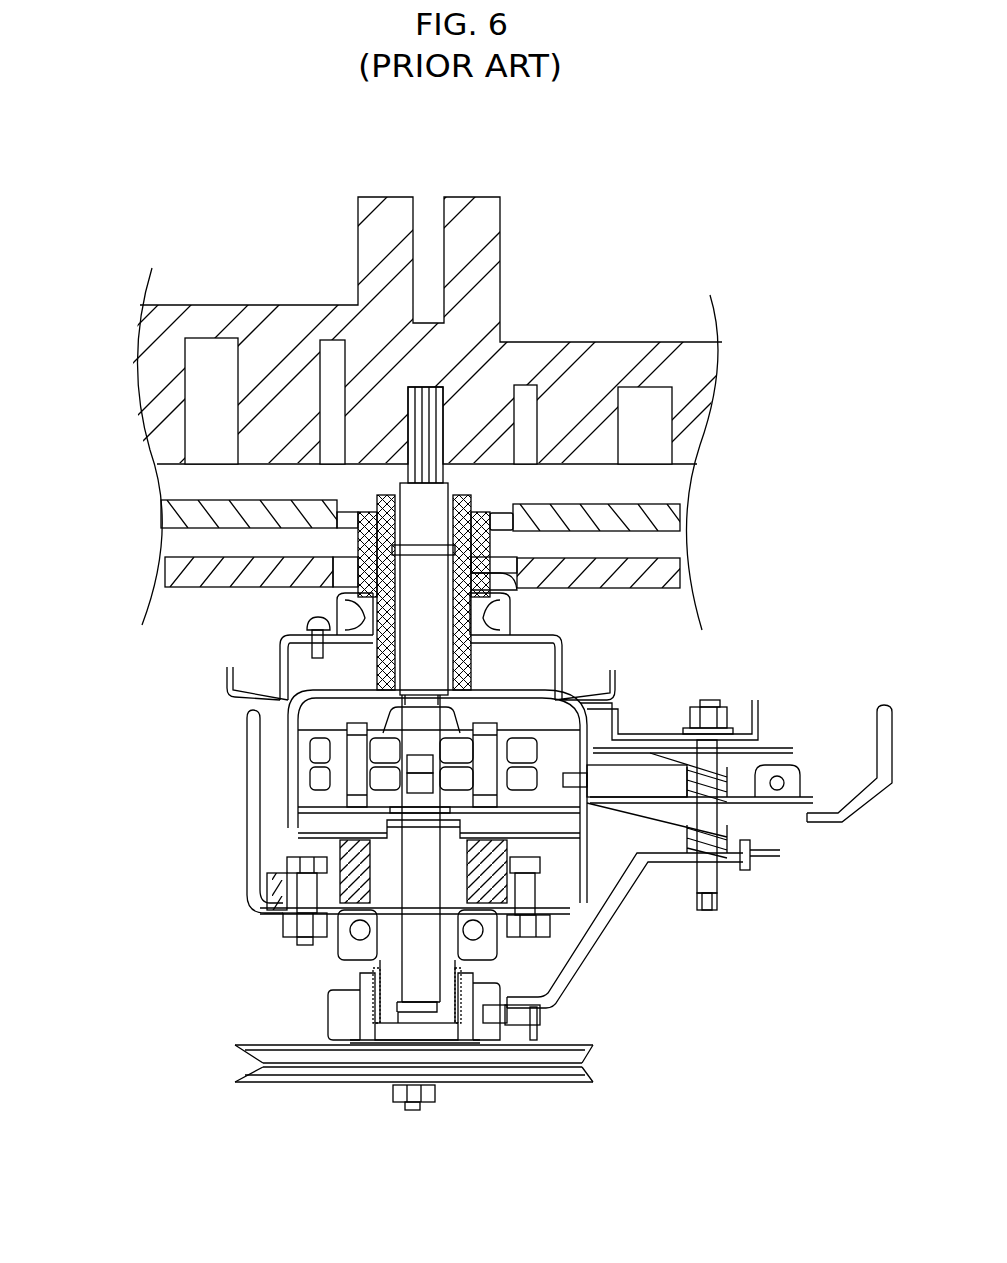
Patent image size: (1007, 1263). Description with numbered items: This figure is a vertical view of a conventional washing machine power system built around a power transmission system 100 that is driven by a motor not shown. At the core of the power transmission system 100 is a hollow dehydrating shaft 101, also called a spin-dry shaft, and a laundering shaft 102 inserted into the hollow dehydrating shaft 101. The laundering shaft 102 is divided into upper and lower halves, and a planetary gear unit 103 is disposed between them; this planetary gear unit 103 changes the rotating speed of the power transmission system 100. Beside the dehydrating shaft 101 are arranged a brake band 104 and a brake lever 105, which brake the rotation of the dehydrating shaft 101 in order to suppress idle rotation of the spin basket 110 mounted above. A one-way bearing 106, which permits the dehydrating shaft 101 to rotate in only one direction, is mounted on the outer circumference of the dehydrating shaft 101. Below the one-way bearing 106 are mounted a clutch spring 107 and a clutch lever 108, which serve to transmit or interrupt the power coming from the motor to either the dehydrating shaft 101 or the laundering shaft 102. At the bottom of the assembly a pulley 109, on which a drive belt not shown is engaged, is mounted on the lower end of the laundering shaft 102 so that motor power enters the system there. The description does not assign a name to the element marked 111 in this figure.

The power transmission system 100 is at (120, 693).
The hollow dehydrating shaft 101 is at (473, 573).
The laundering shaft 102 is at (440, 507).
The planetary gear unit 103 is at (495, 708).
The brake band 104 is at (575, 763).
The brake lever 105 is at (667, 867).
The one-way bearing 106 is at (373, 880).
The clutch spring 107 is at (458, 993).
The clutch lever 108 is at (580, 945).
The pulley 109 is at (593, 1082).
The spin basket 110 is at (190, 517).
The housing 111 is at (147, 375).